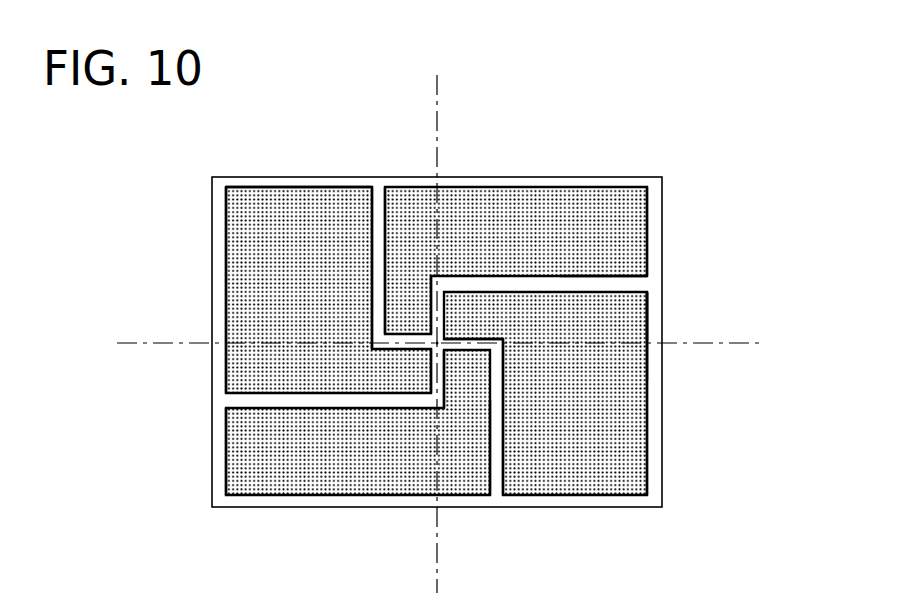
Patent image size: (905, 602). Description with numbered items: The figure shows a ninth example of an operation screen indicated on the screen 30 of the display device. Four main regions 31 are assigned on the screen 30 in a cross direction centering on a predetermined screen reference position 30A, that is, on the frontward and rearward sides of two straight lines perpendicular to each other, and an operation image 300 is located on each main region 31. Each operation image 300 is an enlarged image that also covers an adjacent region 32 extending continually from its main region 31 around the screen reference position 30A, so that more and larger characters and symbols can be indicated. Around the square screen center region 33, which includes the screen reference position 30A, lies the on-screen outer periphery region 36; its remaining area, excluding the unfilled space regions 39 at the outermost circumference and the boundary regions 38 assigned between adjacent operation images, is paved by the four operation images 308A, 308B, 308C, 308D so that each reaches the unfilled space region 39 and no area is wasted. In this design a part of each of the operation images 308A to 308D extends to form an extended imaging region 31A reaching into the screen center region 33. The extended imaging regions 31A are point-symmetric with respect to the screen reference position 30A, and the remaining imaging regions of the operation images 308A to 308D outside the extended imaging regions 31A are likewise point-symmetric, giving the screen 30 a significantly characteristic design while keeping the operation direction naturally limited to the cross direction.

The screen 30 is at (615, 184).
The screen reference position 30A is at (445, 343).
The main region 31 is at (240, 348).
The extended imaging region 31A is at (403, 312).
The adjacent region 32 is at (280, 205).
The screen center region 33 is at (428, 322).
The on-screen outer periphery region 36 is at (612, 287).
The boundary region 38 is at (470, 334).
The unfilled space region 39 is at (655, 333).
The operation image 300 is at (437, 355).
The operation image 308A is at (252, 309).
The operation image 308B is at (385, 477).
The operation image 308C is at (627, 426).
The operation image 308D is at (481, 201).